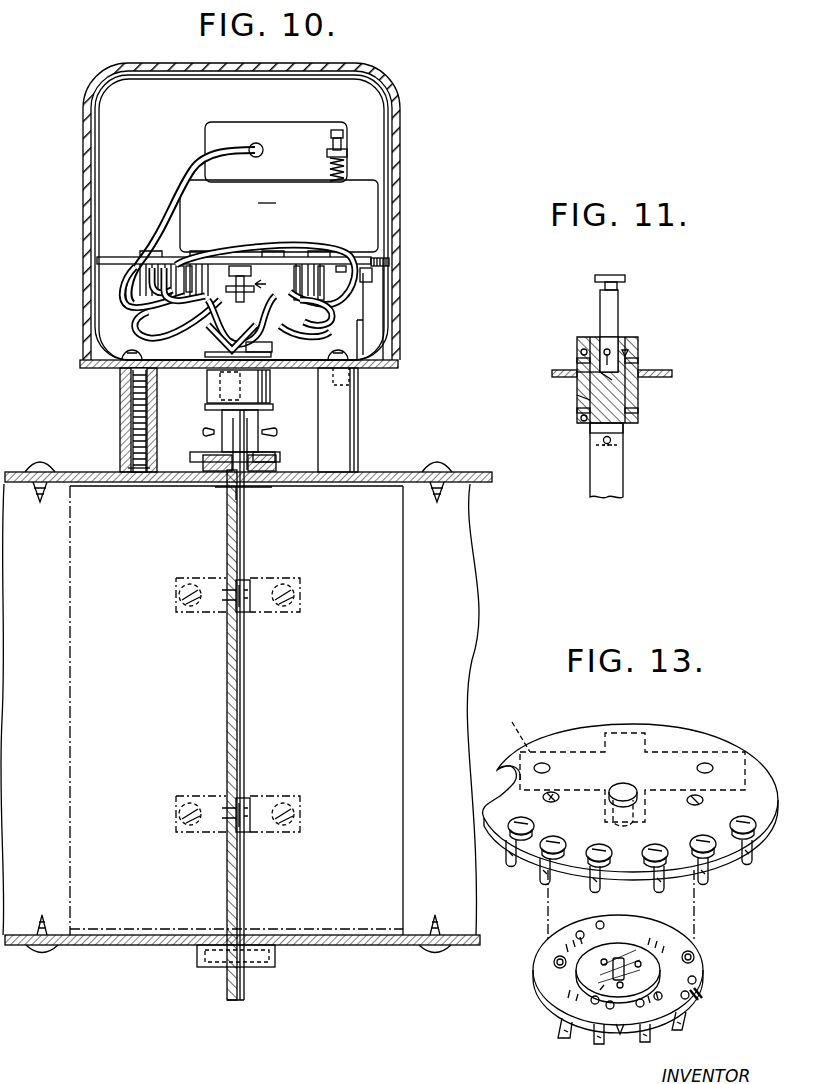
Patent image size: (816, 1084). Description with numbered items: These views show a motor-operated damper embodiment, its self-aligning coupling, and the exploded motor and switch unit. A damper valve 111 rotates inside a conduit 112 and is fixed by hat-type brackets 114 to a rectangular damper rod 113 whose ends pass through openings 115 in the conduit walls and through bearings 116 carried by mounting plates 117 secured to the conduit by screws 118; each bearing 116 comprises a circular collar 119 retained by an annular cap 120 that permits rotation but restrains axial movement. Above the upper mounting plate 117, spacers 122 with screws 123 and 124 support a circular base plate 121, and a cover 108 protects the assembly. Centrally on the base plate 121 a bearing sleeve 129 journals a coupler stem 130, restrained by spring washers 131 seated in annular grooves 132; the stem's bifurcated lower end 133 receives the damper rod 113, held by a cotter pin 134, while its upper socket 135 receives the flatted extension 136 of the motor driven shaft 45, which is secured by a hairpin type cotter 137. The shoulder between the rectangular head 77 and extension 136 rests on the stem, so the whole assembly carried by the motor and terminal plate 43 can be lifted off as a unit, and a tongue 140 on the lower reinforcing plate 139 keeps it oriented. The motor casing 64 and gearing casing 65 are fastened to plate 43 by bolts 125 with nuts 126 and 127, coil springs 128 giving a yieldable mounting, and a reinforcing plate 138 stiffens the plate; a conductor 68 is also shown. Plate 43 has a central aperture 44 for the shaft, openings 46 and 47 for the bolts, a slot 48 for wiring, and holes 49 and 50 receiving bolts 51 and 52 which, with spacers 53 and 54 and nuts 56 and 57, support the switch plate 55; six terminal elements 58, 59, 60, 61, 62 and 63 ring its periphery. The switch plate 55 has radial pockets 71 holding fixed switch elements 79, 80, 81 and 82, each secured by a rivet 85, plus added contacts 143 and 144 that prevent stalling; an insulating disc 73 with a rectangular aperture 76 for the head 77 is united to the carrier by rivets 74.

In FIG. 10, the cover 108 is at (85, 150).
In FIG. 10, the base plate 121 is at (96, 364).
In FIG. 11, the base plate 121 is at (672, 374).
In FIG. 10, the motor casing 64 is at (284, 130).
In FIG. 10, the gearing casing 65 is at (279, 216).
In FIG. 13, the gearing casing 65 is at (632, 777).
In FIG. 10, the bolts 125 is at (337, 128).
In FIG. 10, the nuts 126 is at (347, 152).
In FIG. 10, the coil springs 128 is at (328, 160).
In FIG. 10, the conductor tube 68 is at (252, 142).
In FIG. 10, the motor and terminal plate 43 is at (110, 256).
In FIG. 13, the motor and terminal plate 43 is at (670, 730).
In FIG. 10, the reinforcing plate 138 is at (389, 261).
In FIG. 10, the reinforcing plate 139 is at (348, 270).
In FIG. 13, the reinforcing plate 139 is at (511, 728).
In FIG. 10, the nuts 127 is at (372, 276).
In FIG. 10, the tongue 140 is at (383, 358).
In FIG. 13, the tongue 140 is at (643, 815).
In FIG. 10, the spacer 54 is at (180, 272).
In FIG. 10, the terminal element 61 is at (189, 268).
In FIG. 13, the terminal element 61 is at (654, 880).
In FIG. 10, the terminal element 62 is at (296, 270).
In FIG. 13, the terminal element 62 is at (696, 872).
In FIG. 10, the terminal element 63 is at (320, 270).
In FIG. 13, the terminal element 63 is at (744, 862).
In FIG. 10, the motor driven shaft 45 is at (238, 266).
In FIG. 11, the motor driven shaft 45 is at (625, 280).
In FIG. 10, the terminal element 58 is at (146, 272).
In FIG. 13, the terminal element 58 is at (508, 836).
In FIG. 10, the terminal element 59 is at (150, 284).
In FIG. 13, the terminal element 59 is at (542, 866).
In FIG. 10, the terminal element 60 is at (160, 296).
In FIG. 13, the terminal element 60 is at (590, 880).
In FIG. 10, the nut 57 is at (148, 322).
In FIG. 10, the bolt 52 is at (160, 340).
In FIG. 10, the spacer 53 is at (310, 245).
In FIG. 10, the switch plate 55 is at (326, 310).
In FIG. 13, the switch plate 55 is at (698, 996).
In FIG. 10, the nut 56 is at (332, 334).
In FIG. 10, the rectangular head 77 is at (258, 335).
In FIG. 11, the rectangular head 77 is at (618, 300).
In FIG. 10, the bolt 51 is at (272, 347).
In FIG. 10, the spring washers 131 is at (206, 355).
In FIG. 11, the spring washers 131 is at (580, 360).
In FIG. 10, the hairpin type cotter 137 is at (350, 378).
In FIG. 11, the hairpin type cotter 137 is at (604, 350).
In FIG. 10, the spacers 122 is at (120, 392).
In FIG. 10, the screws 123 is at (147, 395).
In FIG. 10, the screws 124 is at (134, 445).
In FIG. 10, the bearing sleeve 129 is at (262, 383).
In FIG. 11, the bearing sleeve 129 is at (584, 405).
In FIG. 10, the flatted cylindrical extension 136 is at (220, 378).
In FIG. 11, the flatted cylindrical extension 136 is at (600, 384).
In FIG. 10, the coupler stem 130 is at (222, 412).
In FIG. 11, the coupler stem 130 is at (630, 395).
In FIG. 10, the bifurcated lower end 133 is at (212, 430).
In FIG. 11, the bifurcated lower end 133 is at (590, 440).
In FIG. 10, the cotter pin 134 is at (272, 431).
In FIG. 11, the cotter pin 134 is at (604, 442).
In FIG. 10, the annular cap 120 is at (206, 458).
In FIG. 10, the bearings 116 is at (286, 460).
In FIG. 10, the circular collar 119 is at (224, 484).
In FIG. 10, the mounting plates 117 is at (86, 472).
In FIG. 10, the conduit 112 is at (138, 934).
In FIG. 10, the screws 118 is at (36, 470).
In FIG. 10, the damper valve 111 is at (70, 661).
In FIG. 10, the damper rod 113 is at (244, 664).
In FIG. 11, the damper rod 113 is at (623, 470).
In FIG. 10, the openings 115 is at (226, 488).
In FIG. 10, the hat-type brackets 114 is at (252, 614).
In FIG. 11, the socket 135 is at (590, 380).
In FIG. 11, the annular grooves 132 is at (626, 352).
In FIG. 13, the slot 48 is at (503, 772).
In FIG. 13, the central aperture 44 is at (637, 796).
In FIG. 13, the opening 46 is at (544, 762).
In FIG. 13, the opening 47 is at (712, 765).
In FIG. 13, the hole 50 is at (556, 802).
In FIG. 13, the hole 49 is at (703, 801).
In FIG. 13, the fixed switch contact 143 is at (690, 940).
In FIG. 13, the insulating disc 73 is at (652, 960).
In FIG. 13, the fixed switch contact 144 is at (607, 955).
In FIG. 13, the rivets 74 is at (600, 962).
In FIG. 13, the rectangular aperture 76 is at (624, 975).
In FIG. 13, the pockets 71 is at (600, 994).
In FIG. 13, the fixed switch element 79 is at (560, 1036).
In FIG. 13, the fixed switch element 80 is at (598, 1044).
In FIG. 13, the rivet 85 is at (621, 1037).
In FIG. 13, the fixed switch element 81 is at (644, 1042).
In FIG. 13, the fixed switch element 82 is at (684, 1026).